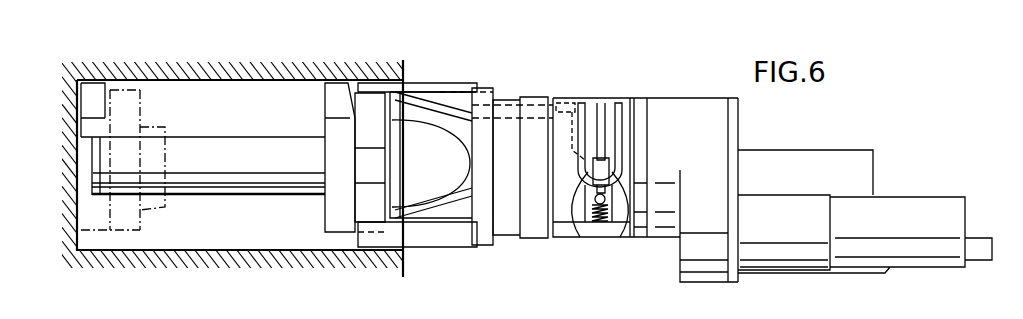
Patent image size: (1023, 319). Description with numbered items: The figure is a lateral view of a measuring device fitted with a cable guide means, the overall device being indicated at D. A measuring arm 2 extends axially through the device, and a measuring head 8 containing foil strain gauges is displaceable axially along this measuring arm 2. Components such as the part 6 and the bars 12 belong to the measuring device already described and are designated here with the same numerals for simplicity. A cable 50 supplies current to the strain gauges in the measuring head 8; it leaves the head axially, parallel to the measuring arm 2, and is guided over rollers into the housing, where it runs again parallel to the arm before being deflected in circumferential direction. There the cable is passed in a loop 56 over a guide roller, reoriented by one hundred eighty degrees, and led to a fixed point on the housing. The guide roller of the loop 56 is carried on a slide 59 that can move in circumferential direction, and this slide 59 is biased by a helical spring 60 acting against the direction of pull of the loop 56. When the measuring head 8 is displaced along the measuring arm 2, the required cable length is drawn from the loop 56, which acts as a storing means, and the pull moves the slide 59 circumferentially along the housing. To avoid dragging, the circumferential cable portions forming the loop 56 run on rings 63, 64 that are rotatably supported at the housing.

The housing D is at (240, 80).
The measuring arm 2 is at (208, 187).
The bearing ring 6 is at (378, 223).
The measuring head 8 is at (338, 225).
The guide bar 12 is at (425, 82).
The cable 50 is at (603, 99).
The loop 56 is at (570, 213).
The slide 59 is at (613, 225).
The helical spring 60 is at (600, 226).
The ring 63 is at (585, 223).
The ring 64 is at (625, 220).